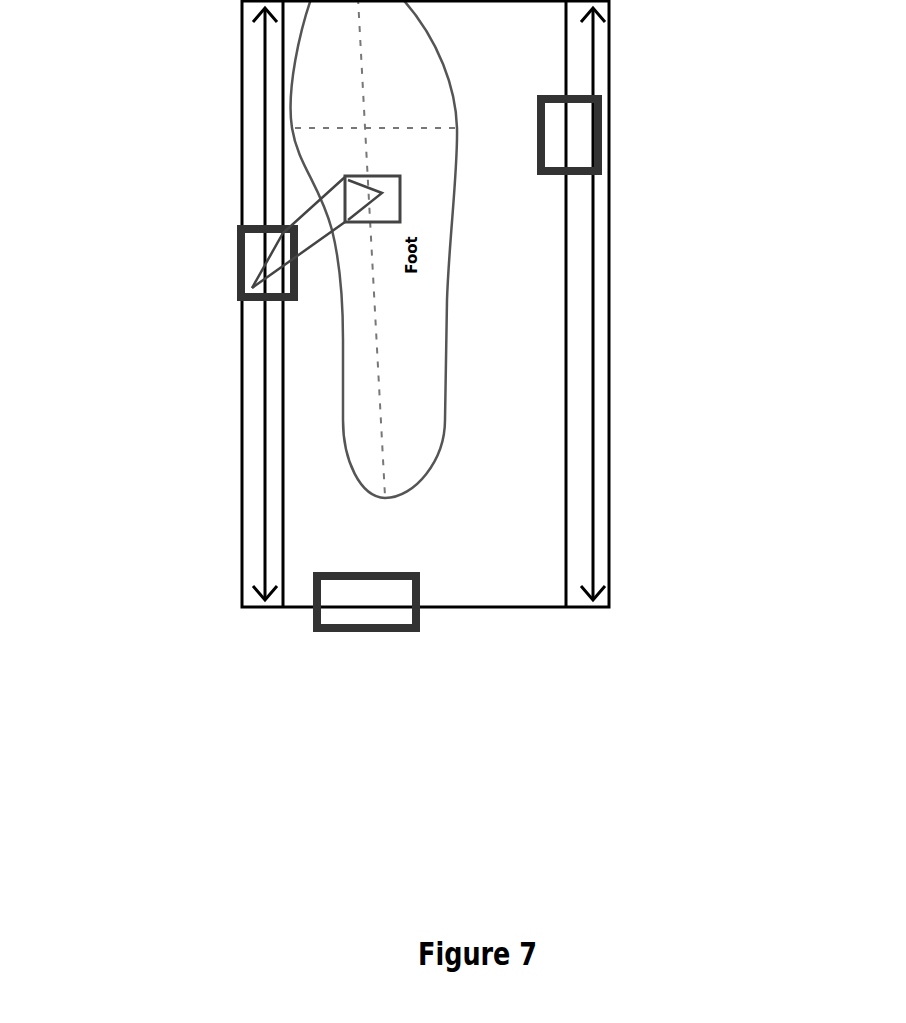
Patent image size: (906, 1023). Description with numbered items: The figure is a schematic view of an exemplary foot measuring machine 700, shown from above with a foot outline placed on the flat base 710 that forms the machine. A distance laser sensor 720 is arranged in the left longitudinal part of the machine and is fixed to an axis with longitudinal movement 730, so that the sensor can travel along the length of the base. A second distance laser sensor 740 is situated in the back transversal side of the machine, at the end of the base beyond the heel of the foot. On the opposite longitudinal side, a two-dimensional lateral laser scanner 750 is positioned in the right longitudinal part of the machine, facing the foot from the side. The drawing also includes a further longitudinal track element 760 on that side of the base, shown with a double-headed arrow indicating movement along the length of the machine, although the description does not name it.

The machine 700 is at (208, 673).
The flat base 710 is at (545, 502).
The distance laser sensor 720 is at (575, 133).
The axis with longitudinal movement 730 is at (593, 297).
The distance laser sensor 740 is at (361, 607).
The 2D lateral laser scanner 750 is at (240, 260).
The left adjustment track 760 is at (262, 422).